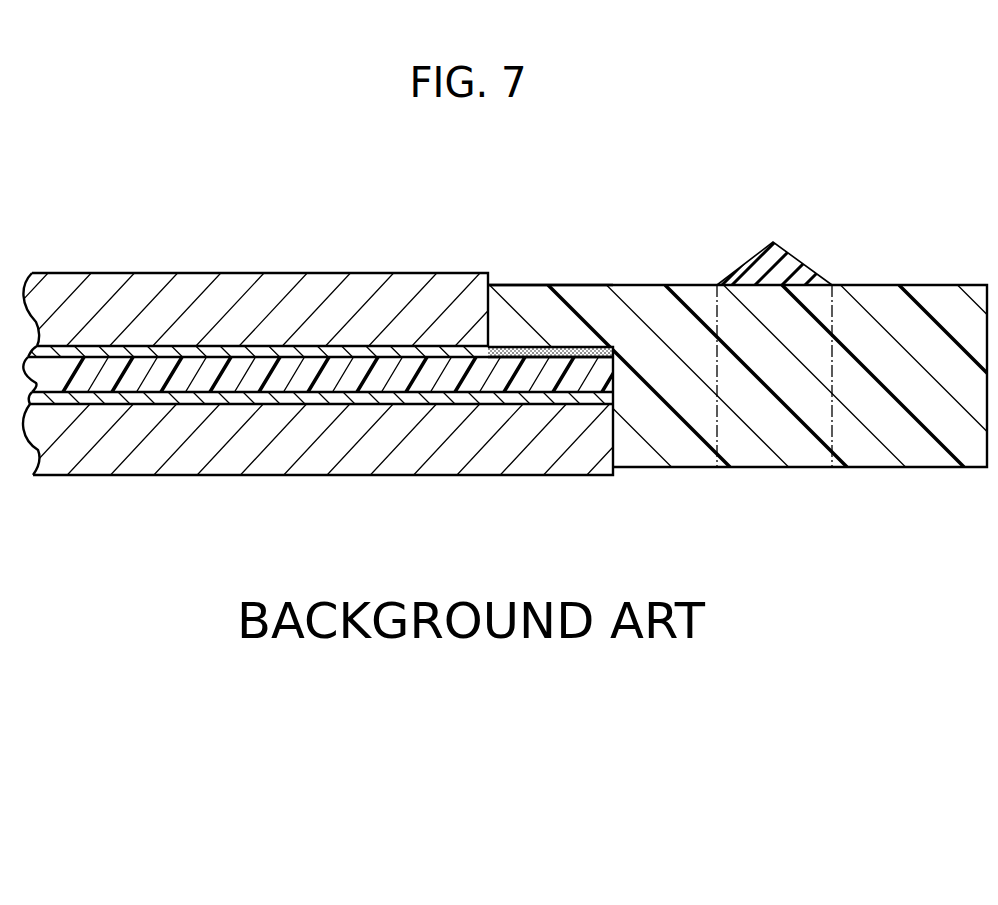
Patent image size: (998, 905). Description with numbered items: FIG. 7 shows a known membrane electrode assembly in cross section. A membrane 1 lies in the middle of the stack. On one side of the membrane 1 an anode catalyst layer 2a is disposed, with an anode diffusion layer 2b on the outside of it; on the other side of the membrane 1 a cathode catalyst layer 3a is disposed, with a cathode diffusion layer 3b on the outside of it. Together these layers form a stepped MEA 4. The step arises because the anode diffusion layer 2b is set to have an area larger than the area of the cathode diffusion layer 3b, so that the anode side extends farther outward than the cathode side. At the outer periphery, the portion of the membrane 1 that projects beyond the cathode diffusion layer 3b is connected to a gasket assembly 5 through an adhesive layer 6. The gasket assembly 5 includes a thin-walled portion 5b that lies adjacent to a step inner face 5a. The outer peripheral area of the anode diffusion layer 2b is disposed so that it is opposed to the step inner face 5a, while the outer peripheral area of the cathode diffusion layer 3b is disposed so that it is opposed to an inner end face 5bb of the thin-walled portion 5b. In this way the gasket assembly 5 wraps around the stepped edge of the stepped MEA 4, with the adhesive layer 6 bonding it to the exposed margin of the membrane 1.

The membrane 1 is at (158, 383).
The anode catalyst layer 2a is at (250, 396).
The anode diffusion layer 2b is at (388, 447).
The cathode catalyst layer 3a is at (94, 350).
The cathode diffusion layer 3b is at (170, 297).
The stepped MEA 4 is at (261, 252).
The gasket assembly 5 is at (895, 305).
The step inner face 5a is at (612, 448).
The thin-walled portion 5b is at (533, 307).
The inner end face 5bb is at (487, 323).
The adhesive layer 6 is at (575, 347).